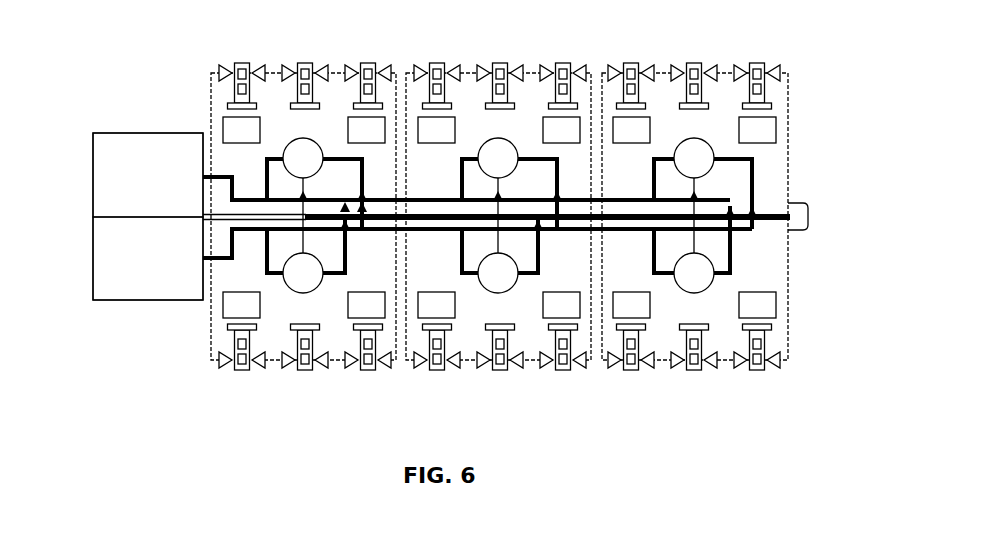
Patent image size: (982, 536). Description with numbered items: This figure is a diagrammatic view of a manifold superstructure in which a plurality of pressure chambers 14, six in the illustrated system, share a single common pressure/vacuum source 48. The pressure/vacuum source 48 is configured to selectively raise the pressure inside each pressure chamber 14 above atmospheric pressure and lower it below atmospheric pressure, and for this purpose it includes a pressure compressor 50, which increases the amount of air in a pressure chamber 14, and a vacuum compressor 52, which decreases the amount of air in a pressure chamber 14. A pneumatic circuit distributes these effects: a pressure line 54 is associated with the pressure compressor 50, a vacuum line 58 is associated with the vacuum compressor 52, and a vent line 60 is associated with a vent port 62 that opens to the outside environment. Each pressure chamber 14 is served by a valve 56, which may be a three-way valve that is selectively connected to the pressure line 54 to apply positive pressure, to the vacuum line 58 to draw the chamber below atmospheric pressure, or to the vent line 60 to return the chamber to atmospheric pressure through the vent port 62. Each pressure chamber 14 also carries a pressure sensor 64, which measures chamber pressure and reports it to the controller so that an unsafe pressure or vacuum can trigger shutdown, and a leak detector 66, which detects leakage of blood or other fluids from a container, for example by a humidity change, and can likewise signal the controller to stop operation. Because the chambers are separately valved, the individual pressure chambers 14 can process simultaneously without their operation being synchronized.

The pressure chamber 14 is at (337, 80).
The pressure/vacuum source 48 is at (98, 126).
The pressure compressor 50 is at (148, 175).
The vacuum compressor 52 is at (148, 258).
The pressure line 54 is at (221, 174).
The valve 56 is at (512, 215).
The vacuum line 58 is at (221, 259).
The vent line 60 is at (622, 219).
The vent port 62 is at (800, 208).
The pressure sensor 64 is at (436, 217).
The leak detector 66 is at (562, 217).